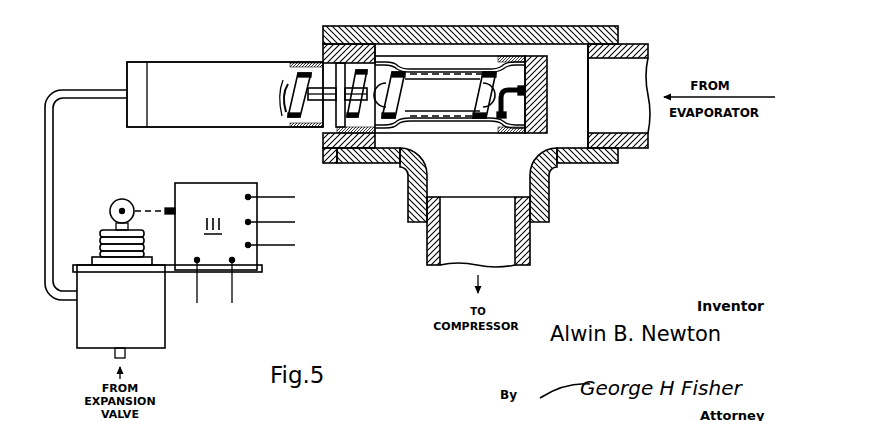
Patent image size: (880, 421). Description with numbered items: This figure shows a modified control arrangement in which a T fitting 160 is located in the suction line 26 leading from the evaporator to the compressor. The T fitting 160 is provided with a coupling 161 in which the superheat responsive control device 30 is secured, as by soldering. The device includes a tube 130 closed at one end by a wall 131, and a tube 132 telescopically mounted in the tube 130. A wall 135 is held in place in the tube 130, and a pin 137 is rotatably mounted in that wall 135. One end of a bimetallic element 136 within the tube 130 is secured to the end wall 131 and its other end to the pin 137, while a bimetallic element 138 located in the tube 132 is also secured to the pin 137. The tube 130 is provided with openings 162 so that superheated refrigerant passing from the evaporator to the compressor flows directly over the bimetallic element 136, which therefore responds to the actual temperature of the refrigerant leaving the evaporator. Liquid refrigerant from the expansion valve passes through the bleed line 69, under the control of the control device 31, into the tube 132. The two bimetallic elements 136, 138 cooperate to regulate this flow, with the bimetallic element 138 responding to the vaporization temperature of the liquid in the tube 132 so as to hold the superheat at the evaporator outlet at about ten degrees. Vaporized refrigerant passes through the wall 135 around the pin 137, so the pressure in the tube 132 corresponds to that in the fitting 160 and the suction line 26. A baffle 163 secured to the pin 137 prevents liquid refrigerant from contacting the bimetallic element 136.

The superheat responsive control device 30 is at (134, 35).
The suction line 26 is at (637, 46).
The control device 31 is at (175, 313).
The bleed line 69 is at (50, 172).
The tube 130 is at (520, 134).
The wall 131 is at (547, 100).
The tube 132 is at (208, 117).
The wall 135 is at (317, 126).
The bimetallic element 136 is at (473, 128).
The pin 137 is at (332, 98).
The bimetallic element 138 is at (282, 112).
The T fitting 160 is at (478, 27).
The coupling 161 is at (323, 42).
The openings 162 is at (424, 66).
The baffle 163 is at (378, 133).